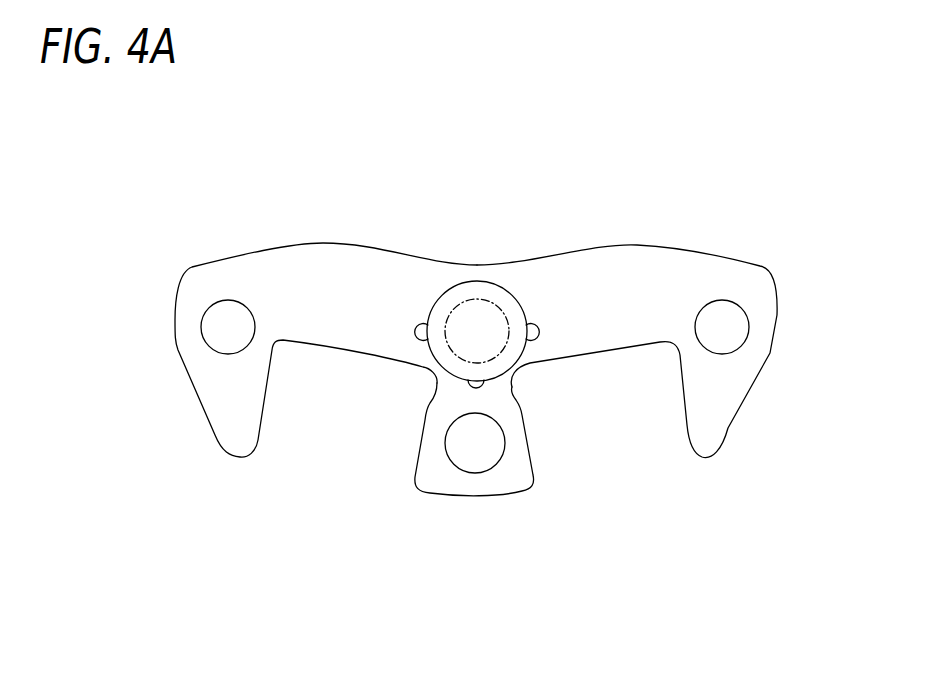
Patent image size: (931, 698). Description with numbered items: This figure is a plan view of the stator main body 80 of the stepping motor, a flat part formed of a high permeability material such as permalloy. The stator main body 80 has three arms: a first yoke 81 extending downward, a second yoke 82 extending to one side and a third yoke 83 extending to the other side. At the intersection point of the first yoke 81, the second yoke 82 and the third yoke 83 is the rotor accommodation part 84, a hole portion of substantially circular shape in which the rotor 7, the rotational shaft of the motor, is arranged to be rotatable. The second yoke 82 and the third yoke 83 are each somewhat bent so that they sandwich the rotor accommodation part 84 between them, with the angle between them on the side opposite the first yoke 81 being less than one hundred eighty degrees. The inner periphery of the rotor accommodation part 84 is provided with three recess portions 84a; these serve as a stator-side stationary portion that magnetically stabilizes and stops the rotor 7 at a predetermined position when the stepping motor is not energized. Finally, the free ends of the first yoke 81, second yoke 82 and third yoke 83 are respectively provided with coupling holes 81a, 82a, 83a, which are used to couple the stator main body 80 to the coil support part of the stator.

The stator main body 80 is at (747, 197).
The first yoke 81 is at (513, 467).
The coupling hole 81a is at (478, 465).
The second yoke 82 is at (278, 273).
The coupling hole 82a is at (220, 337).
The third yoke 83 is at (632, 262).
The coupling hole 83a is at (732, 334).
The rotor accommodation part 84 is at (460, 290).
The recess portions 84a is at (423, 328).
The rotor 7 is at (478, 300).